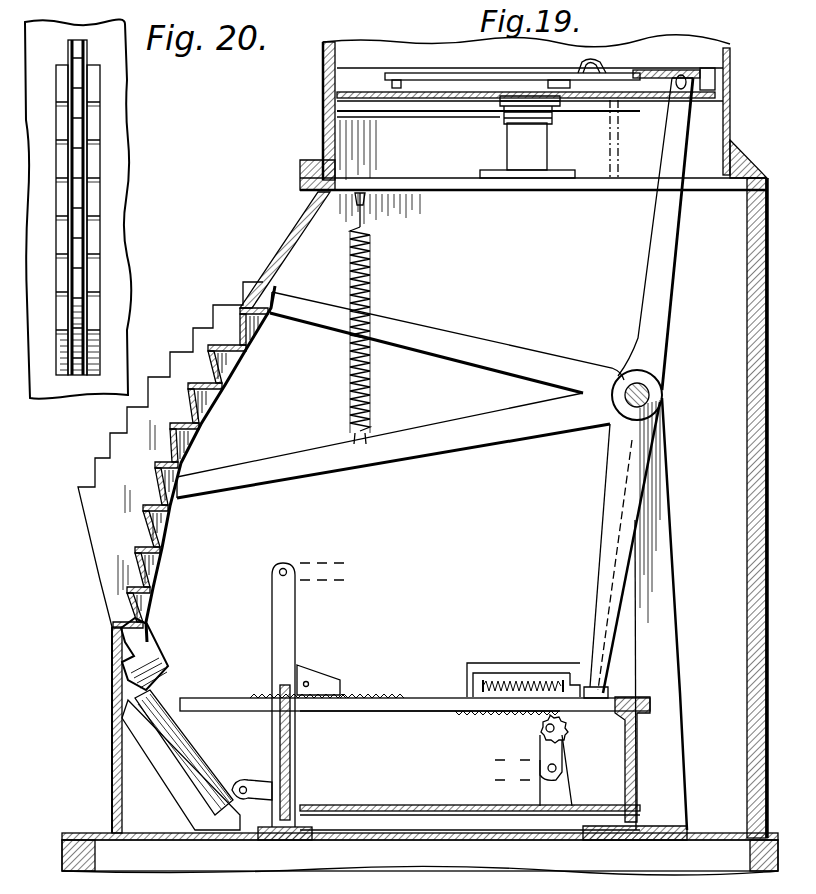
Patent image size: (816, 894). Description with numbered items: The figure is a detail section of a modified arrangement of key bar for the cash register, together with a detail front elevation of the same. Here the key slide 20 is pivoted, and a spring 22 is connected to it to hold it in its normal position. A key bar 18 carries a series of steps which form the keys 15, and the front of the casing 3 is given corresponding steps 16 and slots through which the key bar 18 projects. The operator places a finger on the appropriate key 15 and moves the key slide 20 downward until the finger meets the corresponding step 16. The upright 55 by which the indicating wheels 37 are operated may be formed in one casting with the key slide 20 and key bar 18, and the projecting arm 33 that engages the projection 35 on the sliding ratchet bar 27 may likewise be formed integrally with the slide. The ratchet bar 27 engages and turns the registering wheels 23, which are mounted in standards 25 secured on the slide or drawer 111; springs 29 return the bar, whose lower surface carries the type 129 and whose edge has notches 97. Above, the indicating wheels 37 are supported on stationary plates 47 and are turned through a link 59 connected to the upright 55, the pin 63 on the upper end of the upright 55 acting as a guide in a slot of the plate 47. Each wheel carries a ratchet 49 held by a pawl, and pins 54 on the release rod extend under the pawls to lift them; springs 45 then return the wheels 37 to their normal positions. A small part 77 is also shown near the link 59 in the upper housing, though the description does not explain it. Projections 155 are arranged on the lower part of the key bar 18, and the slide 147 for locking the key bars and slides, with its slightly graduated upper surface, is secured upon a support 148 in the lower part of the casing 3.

In FIG. 19, the casing 3 is at (112, 779).
In FIG. 20, the keys 15 is at (78, 62).
In FIG. 19, the keys 15 is at (182, 345).
In FIG. 20, the steps 16 is at (66, 214).
In FIG. 19, the steps 16 is at (250, 308).
In FIG. 20, the key bar 18 is at (80, 297).
In FIG. 19, the key bar 18 is at (160, 468).
In FIG. 19, the key slide 20 is at (290, 480).
In FIG. 19, the spring 22 is at (372, 362).
In FIG. 19, the registering wheels 23 is at (545, 725).
In FIG. 19, the standards 25 is at (556, 752).
In FIG. 19, the sliding ratchet bars 27 is at (428, 704).
In FIG. 19, the springs 29 is at (537, 682).
In FIG. 19, the projecting arm 33 is at (606, 514).
In FIG. 19, the projection 35 is at (612, 696).
In FIG. 19, the indicating wheels 37 is at (416, 112).
In FIG. 19, the springs 45 is at (505, 112).
In FIG. 19, the plates 47 is at (502, 72).
In FIG. 19, the ratchet 49 is at (559, 80).
In FIG. 19, the pins 54 is at (600, 62).
In FIG. 19, the upright 55 is at (650, 250).
In FIG. 19, the link 59 is at (432, 73).
In FIG. 19, the pin 63 is at (684, 70).
In FIG. 19, the stop 77 is at (392, 83).
In FIG. 19, the notches 97 is at (266, 697).
In FIG. 19, the slide or drawer 111 is at (343, 807).
In FIG. 19, the type 129 is at (376, 714).
In FIG. 19, the slide 147 is at (188, 756).
In FIG. 19, the support 148 is at (176, 772).
In FIG. 19, the projections 155 is at (166, 660).